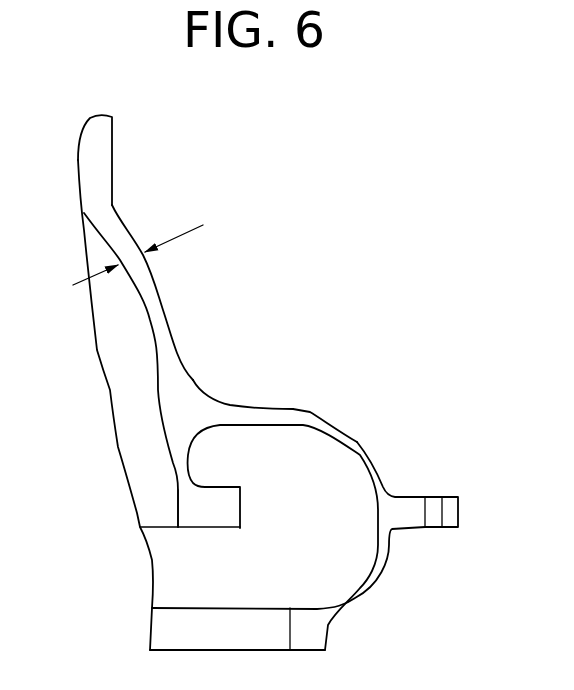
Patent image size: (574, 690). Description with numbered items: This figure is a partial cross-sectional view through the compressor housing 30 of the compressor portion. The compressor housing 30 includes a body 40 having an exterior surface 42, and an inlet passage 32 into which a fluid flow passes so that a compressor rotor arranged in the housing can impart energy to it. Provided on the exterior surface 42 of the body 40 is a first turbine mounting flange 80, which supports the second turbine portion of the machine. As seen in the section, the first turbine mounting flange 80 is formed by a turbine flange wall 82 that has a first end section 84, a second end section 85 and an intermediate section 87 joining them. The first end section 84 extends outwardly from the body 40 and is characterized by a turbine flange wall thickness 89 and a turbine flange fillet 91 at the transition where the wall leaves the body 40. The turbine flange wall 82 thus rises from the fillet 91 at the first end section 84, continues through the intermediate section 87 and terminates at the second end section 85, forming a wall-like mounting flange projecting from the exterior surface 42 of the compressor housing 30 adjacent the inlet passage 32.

The compressor housing 30 is at (377, 417).
The inlet passage 32 is at (315, 522).
The body 40 is at (380, 470).
The exterior surface 42 is at (295, 408).
The first turbine mounting flange 80 is at (172, 136).
The turbine flange wall 82 is at (190, 327).
The first end section 84 is at (190, 407).
The second end section 85 is at (105, 125).
The intermediate section 87 is at (152, 307).
The turbine flange wall thickness 89 is at (190, 233).
The turbine flange fillet 91 is at (202, 387).